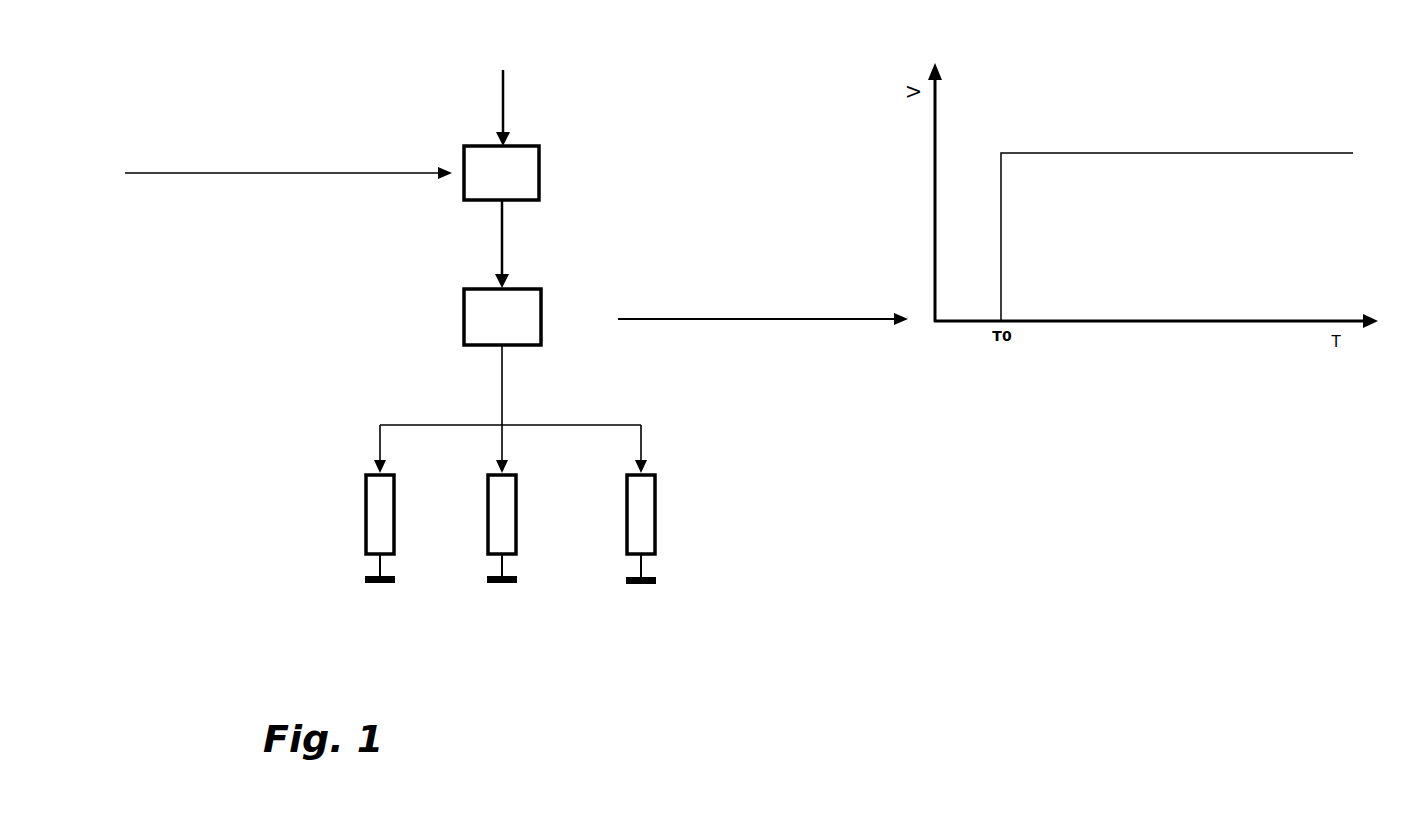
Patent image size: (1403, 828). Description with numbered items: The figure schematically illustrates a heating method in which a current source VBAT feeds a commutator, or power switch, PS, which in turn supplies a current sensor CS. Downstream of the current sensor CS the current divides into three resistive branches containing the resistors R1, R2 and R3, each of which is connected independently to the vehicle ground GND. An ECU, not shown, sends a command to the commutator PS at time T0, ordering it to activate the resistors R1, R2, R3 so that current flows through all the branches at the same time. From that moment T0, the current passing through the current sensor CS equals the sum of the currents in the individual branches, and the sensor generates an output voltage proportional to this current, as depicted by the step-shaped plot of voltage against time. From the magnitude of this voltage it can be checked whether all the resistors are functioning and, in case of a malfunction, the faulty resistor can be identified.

The commutator PS is at (501, 173).
The current sensor CS is at (502, 317).
The resistor R1 is at (397, 529).
The resistor R2 is at (519, 529).
The resistor R3 is at (658, 529).
The current source VBAT is at (505, 90).
The time T0 is at (288, 162).
The vehicle ground GND is at (553, 597).